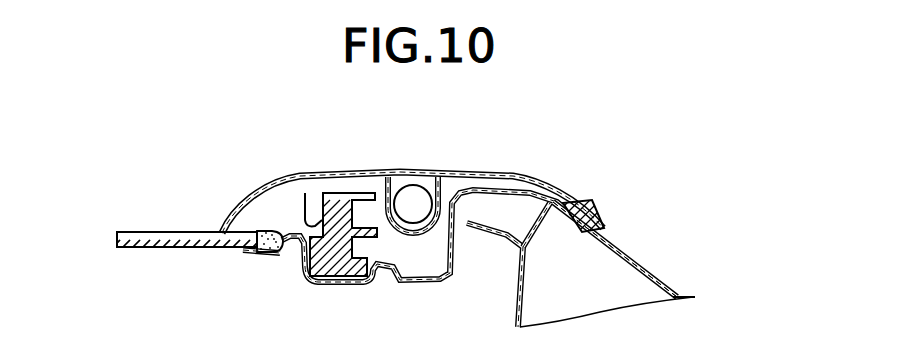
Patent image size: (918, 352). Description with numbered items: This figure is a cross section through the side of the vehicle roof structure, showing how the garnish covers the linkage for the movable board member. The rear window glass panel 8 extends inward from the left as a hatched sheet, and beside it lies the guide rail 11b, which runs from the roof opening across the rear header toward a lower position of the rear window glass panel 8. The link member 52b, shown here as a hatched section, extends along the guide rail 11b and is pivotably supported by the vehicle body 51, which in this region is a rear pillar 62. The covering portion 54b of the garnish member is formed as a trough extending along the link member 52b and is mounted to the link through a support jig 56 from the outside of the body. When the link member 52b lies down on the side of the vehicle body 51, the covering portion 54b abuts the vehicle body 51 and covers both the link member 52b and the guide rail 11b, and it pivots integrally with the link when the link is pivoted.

The rear window glass panel 8 is at (172, 250).
The guide rail 11b is at (333, 278).
The support jig 56 is at (390, 175).
The link member 52b is at (427, 178).
The covering portion 54b is at (523, 176).
The vehicle body 51 is at (630, 247).
The rear pillar 62 is at (615, 249).